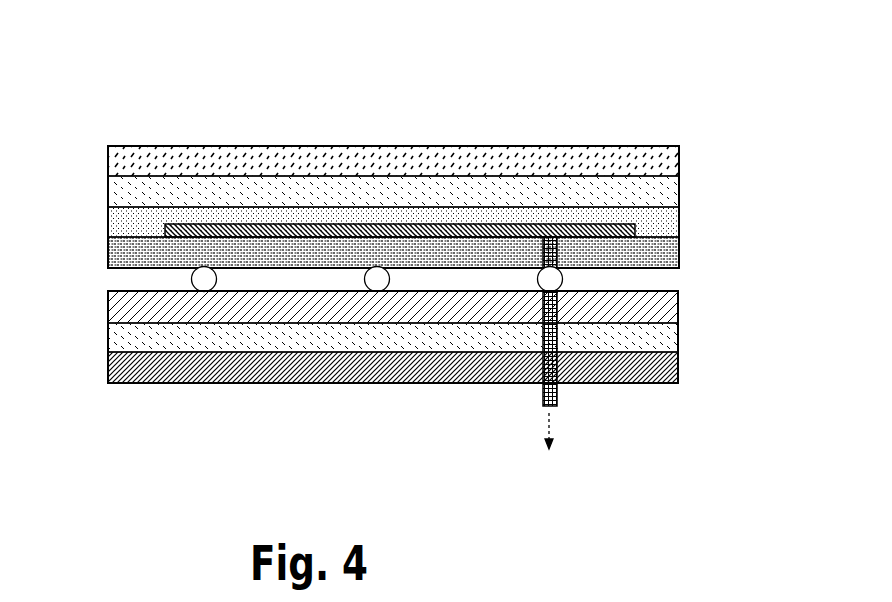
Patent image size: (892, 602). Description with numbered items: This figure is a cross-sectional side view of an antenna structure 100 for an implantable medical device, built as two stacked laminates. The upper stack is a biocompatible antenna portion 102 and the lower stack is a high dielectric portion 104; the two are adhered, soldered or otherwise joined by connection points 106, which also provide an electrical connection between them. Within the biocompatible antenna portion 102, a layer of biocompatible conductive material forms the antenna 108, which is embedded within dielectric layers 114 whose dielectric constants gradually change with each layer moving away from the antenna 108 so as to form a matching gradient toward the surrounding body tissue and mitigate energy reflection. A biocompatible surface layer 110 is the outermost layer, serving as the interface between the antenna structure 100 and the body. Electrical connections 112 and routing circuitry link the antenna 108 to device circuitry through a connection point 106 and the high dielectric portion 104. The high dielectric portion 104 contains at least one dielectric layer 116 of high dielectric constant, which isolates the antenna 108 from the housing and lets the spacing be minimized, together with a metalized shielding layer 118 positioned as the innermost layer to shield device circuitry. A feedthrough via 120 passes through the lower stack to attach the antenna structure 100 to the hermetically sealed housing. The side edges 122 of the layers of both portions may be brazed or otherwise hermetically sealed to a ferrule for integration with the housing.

The antenna structure 100 is at (119, 106).
The biocompatible antenna portion 102 is at (693, 268).
The high dielectric portion 104 is at (693, 291).
The connection points 106 is at (192, 282).
The antenna 108 is at (317, 222).
The biocompatible surface layer 110 is at (120, 166).
The electrical connections 112 is at (558, 265).
The dielectric layers 114 is at (125, 250).
The dielectric layer 116 is at (118, 330).
The shielding layer 118 is at (108, 370).
The feedthrough via 120 is at (558, 395).
The side edges 122 is at (108, 185).